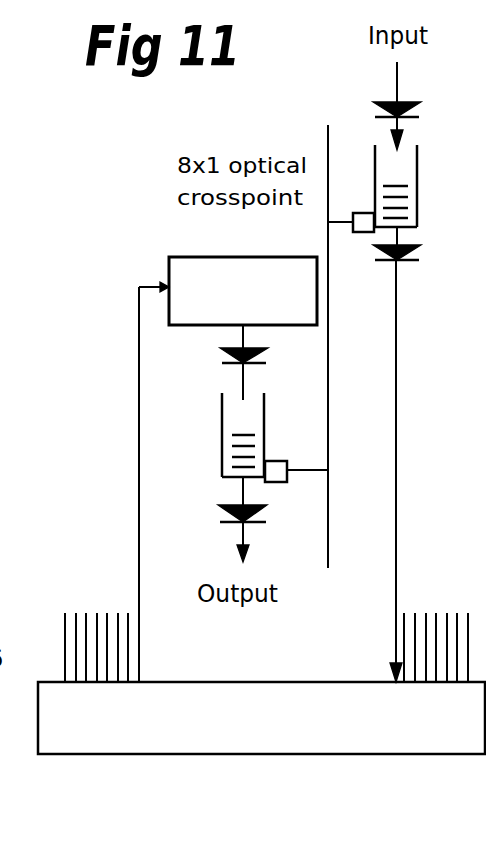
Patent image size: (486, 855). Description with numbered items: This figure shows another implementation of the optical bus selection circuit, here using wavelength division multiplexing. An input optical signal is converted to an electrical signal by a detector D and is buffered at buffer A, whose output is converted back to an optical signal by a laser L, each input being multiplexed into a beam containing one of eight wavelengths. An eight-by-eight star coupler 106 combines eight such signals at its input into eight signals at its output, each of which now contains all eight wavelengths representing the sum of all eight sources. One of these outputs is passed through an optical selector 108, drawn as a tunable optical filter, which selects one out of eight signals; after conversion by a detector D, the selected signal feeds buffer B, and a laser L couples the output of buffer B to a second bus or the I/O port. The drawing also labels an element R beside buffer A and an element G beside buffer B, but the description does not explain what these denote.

The optical selector 108 is at (168, 267).
The 8×8 star coupler 106 is at (290, 755).
The detector D is at (334, 239).
The buffer A is at (407, 186).
The reflector R is at (351, 206).
The buffer B is at (228, 435).
The gate G is at (296, 458).
The laser L is at (341, 383).